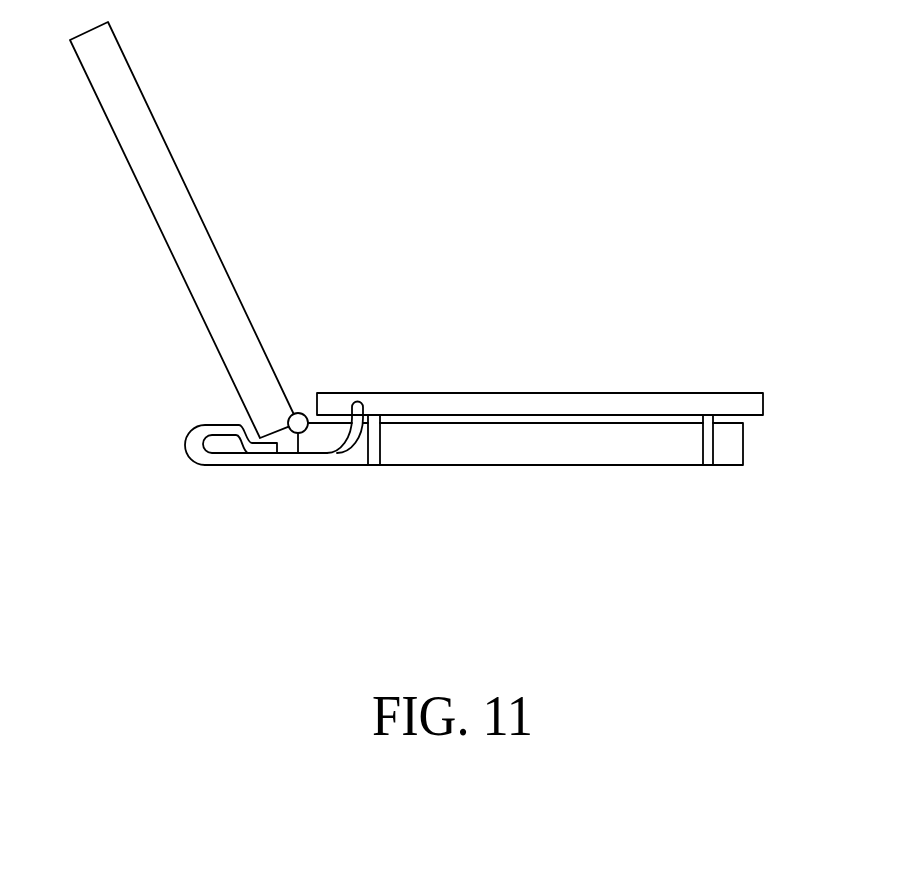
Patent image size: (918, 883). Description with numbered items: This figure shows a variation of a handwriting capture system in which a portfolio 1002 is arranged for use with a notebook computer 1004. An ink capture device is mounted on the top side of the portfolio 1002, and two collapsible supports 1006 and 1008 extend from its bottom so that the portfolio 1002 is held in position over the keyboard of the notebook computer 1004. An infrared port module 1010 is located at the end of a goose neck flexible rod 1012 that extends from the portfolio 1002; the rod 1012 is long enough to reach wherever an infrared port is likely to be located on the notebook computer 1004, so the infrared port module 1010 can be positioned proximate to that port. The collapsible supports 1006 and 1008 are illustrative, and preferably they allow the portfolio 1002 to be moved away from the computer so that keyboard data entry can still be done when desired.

The portfolio 1002 is at (607, 393).
The notebook computer 1004 is at (165, 113).
The collapsible support 1006 is at (380, 448).
The collapsible support 1008 is at (713, 447).
The infrared port module 1010 is at (277, 445).
The goose neck flexible rod 1012 is at (200, 430).